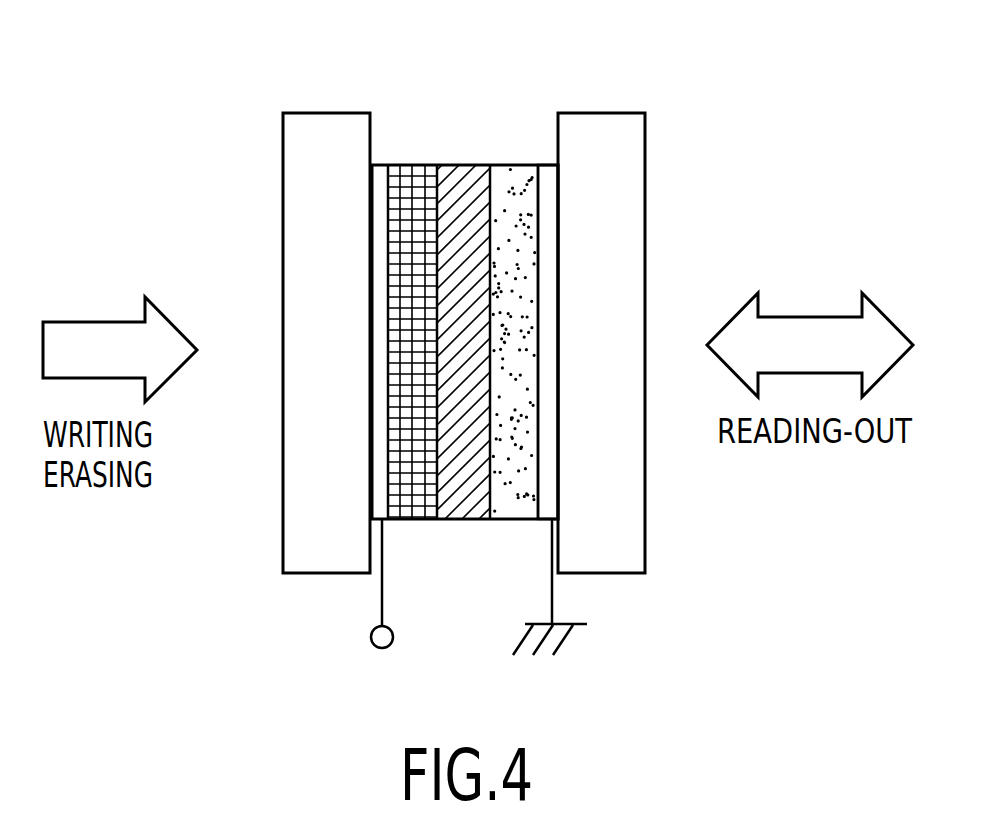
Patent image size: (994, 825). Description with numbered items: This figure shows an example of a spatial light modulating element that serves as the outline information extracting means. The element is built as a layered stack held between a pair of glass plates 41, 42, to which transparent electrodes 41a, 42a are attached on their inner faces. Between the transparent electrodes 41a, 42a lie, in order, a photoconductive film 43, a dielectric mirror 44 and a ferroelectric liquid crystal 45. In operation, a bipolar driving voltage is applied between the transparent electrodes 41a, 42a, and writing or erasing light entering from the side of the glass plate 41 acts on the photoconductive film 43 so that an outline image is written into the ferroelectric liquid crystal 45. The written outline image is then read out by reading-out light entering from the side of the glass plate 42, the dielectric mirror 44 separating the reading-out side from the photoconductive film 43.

The glass plate 41 is at (332, 113).
The transparent electrode 41a is at (380, 163).
The glass plate 42 is at (605, 113).
The transparent electrode 42a is at (548, 163).
The photoconductive film 43 is at (408, 165).
The dielectric mirror 44 is at (467, 165).
The ferroelectric liquid crystal 45 is at (512, 165).